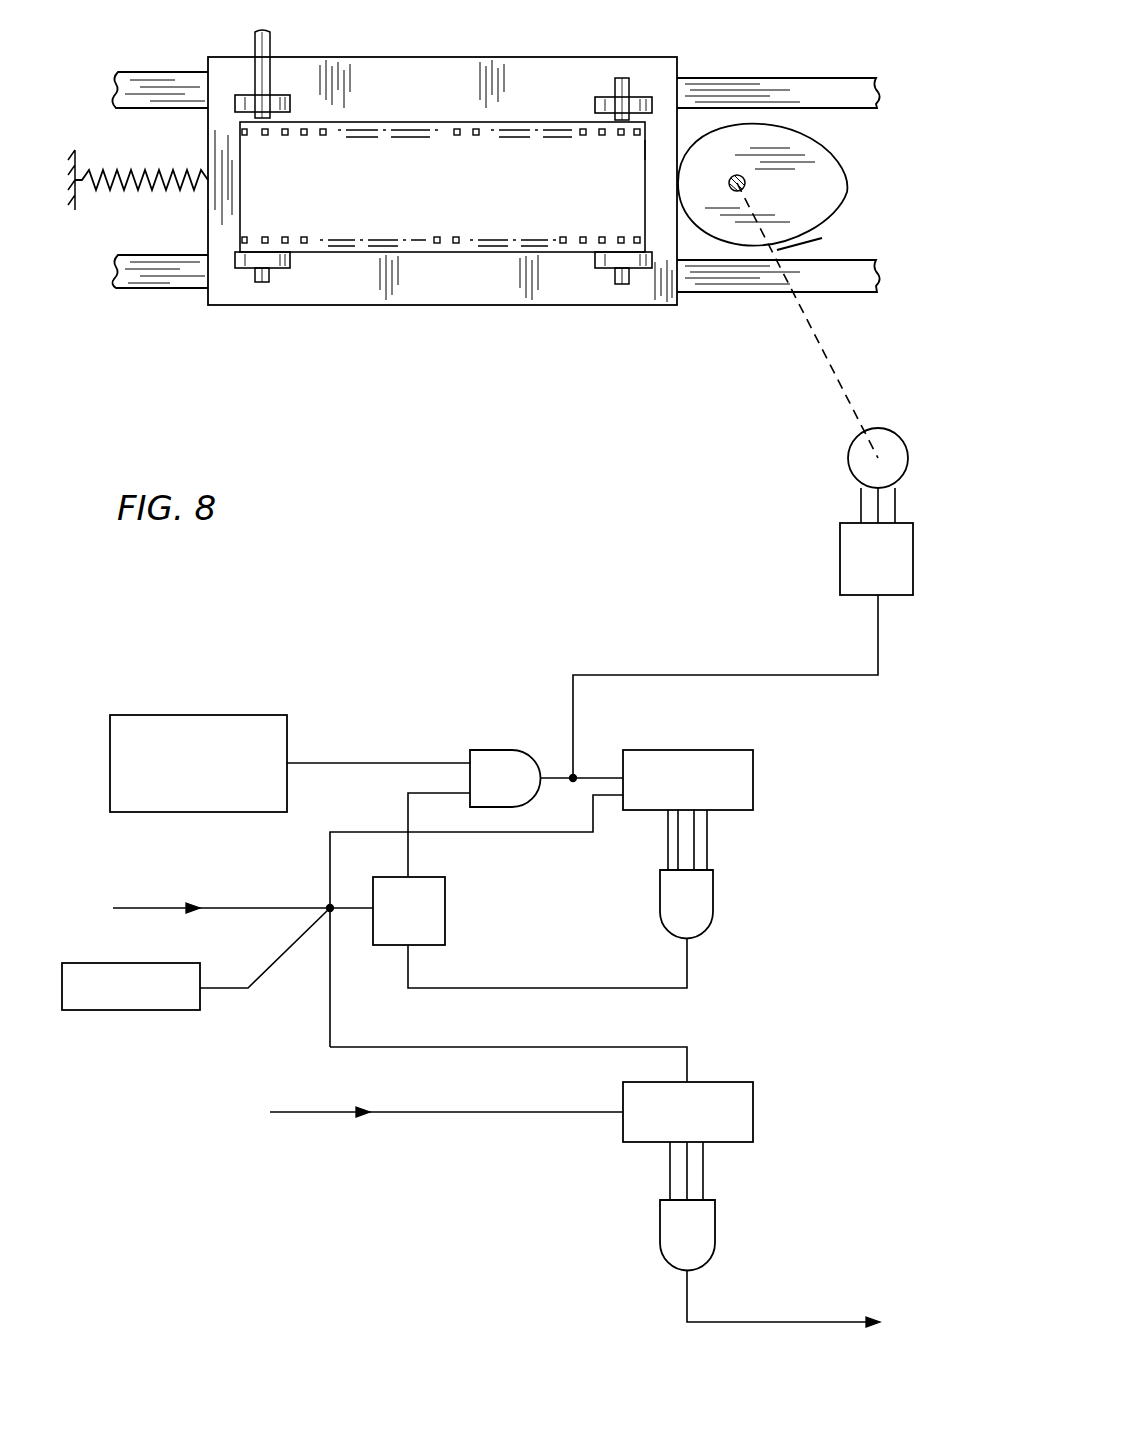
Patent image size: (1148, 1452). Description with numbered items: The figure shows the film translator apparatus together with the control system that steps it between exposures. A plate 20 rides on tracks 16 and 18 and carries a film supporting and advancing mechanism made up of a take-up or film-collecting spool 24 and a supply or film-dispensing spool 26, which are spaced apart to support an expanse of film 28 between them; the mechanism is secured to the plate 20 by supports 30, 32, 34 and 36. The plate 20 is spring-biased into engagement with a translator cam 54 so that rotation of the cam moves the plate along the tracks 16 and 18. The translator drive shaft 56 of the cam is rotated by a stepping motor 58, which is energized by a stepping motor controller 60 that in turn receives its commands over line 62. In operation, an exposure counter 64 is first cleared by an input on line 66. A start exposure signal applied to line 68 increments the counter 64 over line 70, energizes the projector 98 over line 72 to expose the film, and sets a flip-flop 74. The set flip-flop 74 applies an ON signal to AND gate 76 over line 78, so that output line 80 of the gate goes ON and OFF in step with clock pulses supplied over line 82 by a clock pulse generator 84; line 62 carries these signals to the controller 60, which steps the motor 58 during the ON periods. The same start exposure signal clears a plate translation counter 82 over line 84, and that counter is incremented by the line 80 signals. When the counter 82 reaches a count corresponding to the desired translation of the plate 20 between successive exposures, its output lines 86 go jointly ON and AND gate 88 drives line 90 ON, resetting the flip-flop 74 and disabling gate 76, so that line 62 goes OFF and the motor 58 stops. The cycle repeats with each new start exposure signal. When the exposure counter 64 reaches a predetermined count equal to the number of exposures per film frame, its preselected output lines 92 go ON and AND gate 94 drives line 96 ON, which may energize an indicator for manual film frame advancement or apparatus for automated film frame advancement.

The track 16 is at (800, 80).
The track 18 is at (762, 290).
The plate 20 is at (470, 62).
The take-up spool 24 is at (246, 148).
The supply spool 26 is at (645, 150).
The film 28 is at (388, 142).
The support 30 is at (278, 95).
The support 32 is at (280, 268).
The support 34 is at (608, 268).
The support 36 is at (605, 97).
The cam 54 is at (825, 155).
The translator drive shaft 56 is at (817, 238).
The stepping motor 58 is at (890, 440).
The stepping motor controller 60 is at (840, 552).
The line 62 is at (680, 675).
The exposure counter 64 is at (733, 1082).
The line 66 is at (465, 1112).
The line 68 is at (245, 908).
The line 70 is at (530, 1047).
The line 72 is at (272, 965).
The flip-flop 74 is at (445, 900).
The AND gate 76 is at (500, 750).
The line 78 is at (408, 800).
The output line 80 is at (556, 778).
The plate translation counter 82 is at (385, 763).
The clock pulse generator 84 is at (240, 715).
The output lines 86 is at (707, 845).
The AND gate 88 is at (713, 898).
The line 90 is at (544, 988).
The output lines 92 is at (703, 1168).
The AND gate 94 is at (715, 1224).
The line 96 is at (778, 1322).
The projector 98 is at (140, 1010).